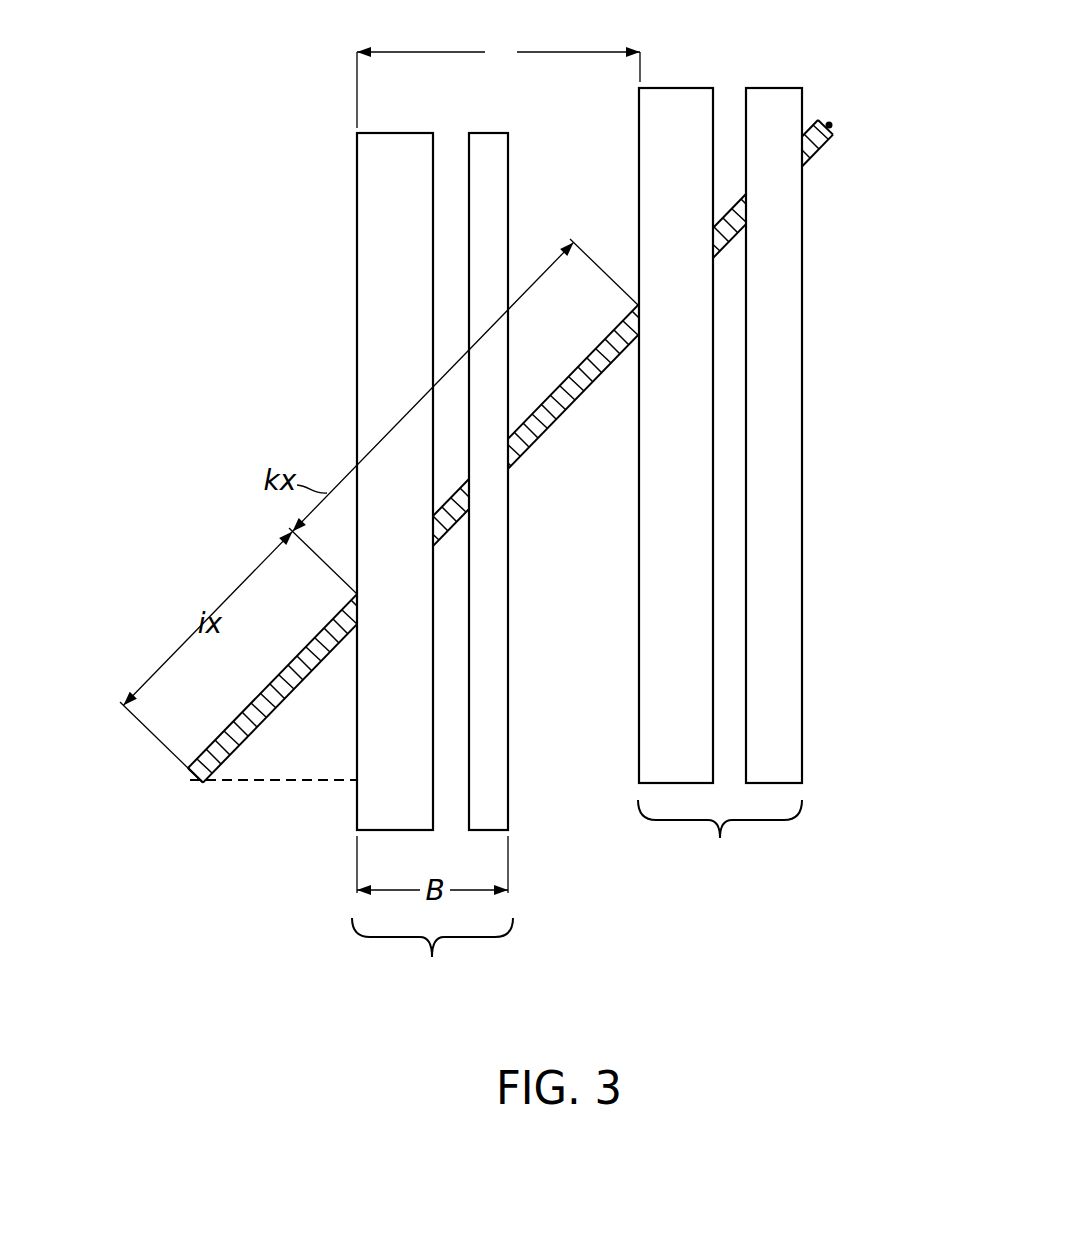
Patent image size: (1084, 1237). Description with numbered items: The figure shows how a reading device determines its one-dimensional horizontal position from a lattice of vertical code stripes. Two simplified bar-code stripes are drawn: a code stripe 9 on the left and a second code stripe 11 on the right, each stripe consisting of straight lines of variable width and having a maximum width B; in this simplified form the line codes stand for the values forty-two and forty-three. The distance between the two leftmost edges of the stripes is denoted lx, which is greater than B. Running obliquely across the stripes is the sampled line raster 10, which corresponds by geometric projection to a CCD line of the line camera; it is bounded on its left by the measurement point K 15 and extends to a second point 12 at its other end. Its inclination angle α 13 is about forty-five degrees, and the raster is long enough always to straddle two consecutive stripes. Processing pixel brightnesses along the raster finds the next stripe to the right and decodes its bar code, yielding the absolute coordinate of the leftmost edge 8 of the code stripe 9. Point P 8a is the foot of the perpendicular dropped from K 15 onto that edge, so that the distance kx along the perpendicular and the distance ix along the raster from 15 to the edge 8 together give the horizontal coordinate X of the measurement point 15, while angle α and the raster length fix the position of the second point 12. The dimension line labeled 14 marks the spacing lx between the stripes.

The leftmost edge 8 is at (357, 217).
The point P 8a is at (355, 783).
The code stripe 9 is at (408, 563).
The line raster 10 is at (557, 418).
The code stripe 11 is at (723, 449).
The second point 12 is at (832, 126).
The inclination angle α 13 is at (777, 88).
The pitch spacing lx 14 is at (570, 50).
The measurement point K 15 is at (200, 785).